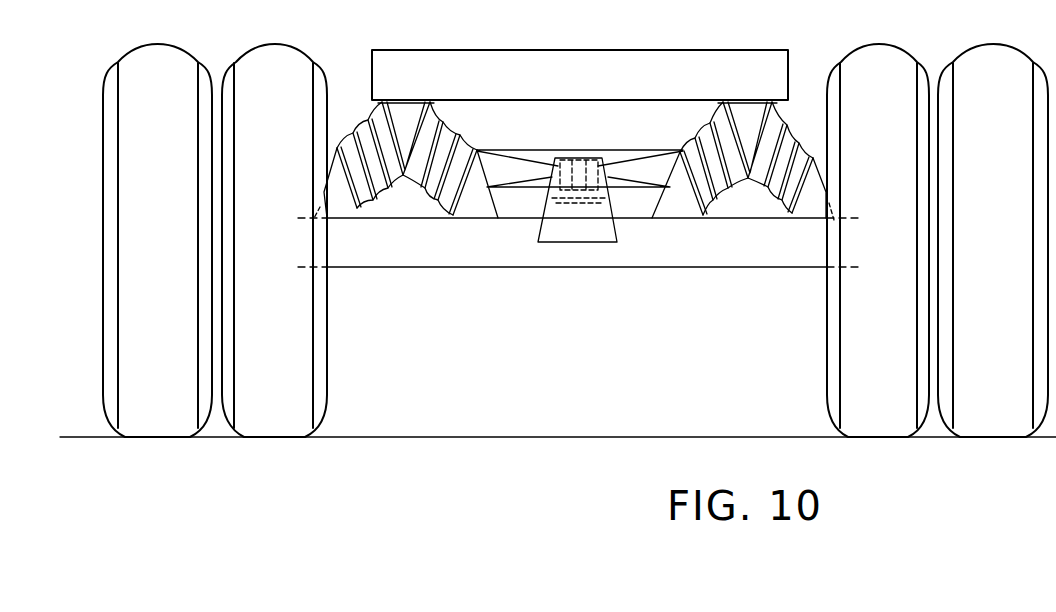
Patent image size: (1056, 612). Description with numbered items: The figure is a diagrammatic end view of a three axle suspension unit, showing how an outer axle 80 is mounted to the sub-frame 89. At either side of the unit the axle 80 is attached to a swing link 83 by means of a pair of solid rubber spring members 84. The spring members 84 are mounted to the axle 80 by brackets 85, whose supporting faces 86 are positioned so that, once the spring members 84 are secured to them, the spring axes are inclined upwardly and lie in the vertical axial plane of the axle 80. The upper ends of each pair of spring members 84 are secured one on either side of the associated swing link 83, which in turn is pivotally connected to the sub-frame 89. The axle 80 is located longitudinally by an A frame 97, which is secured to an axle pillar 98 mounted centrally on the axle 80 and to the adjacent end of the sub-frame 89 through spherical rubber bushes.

The axle 80 is at (488, 255).
The swing link 83 is at (404, 118).
The solid rubber spring member 84 is at (367, 122).
The bracket 85 is at (336, 191).
The supporting face 86 is at (363, 207).
The sub-frame 89 is at (632, 62).
The A frame 97 is at (637, 175).
The axle pillar 98 is at (593, 215).